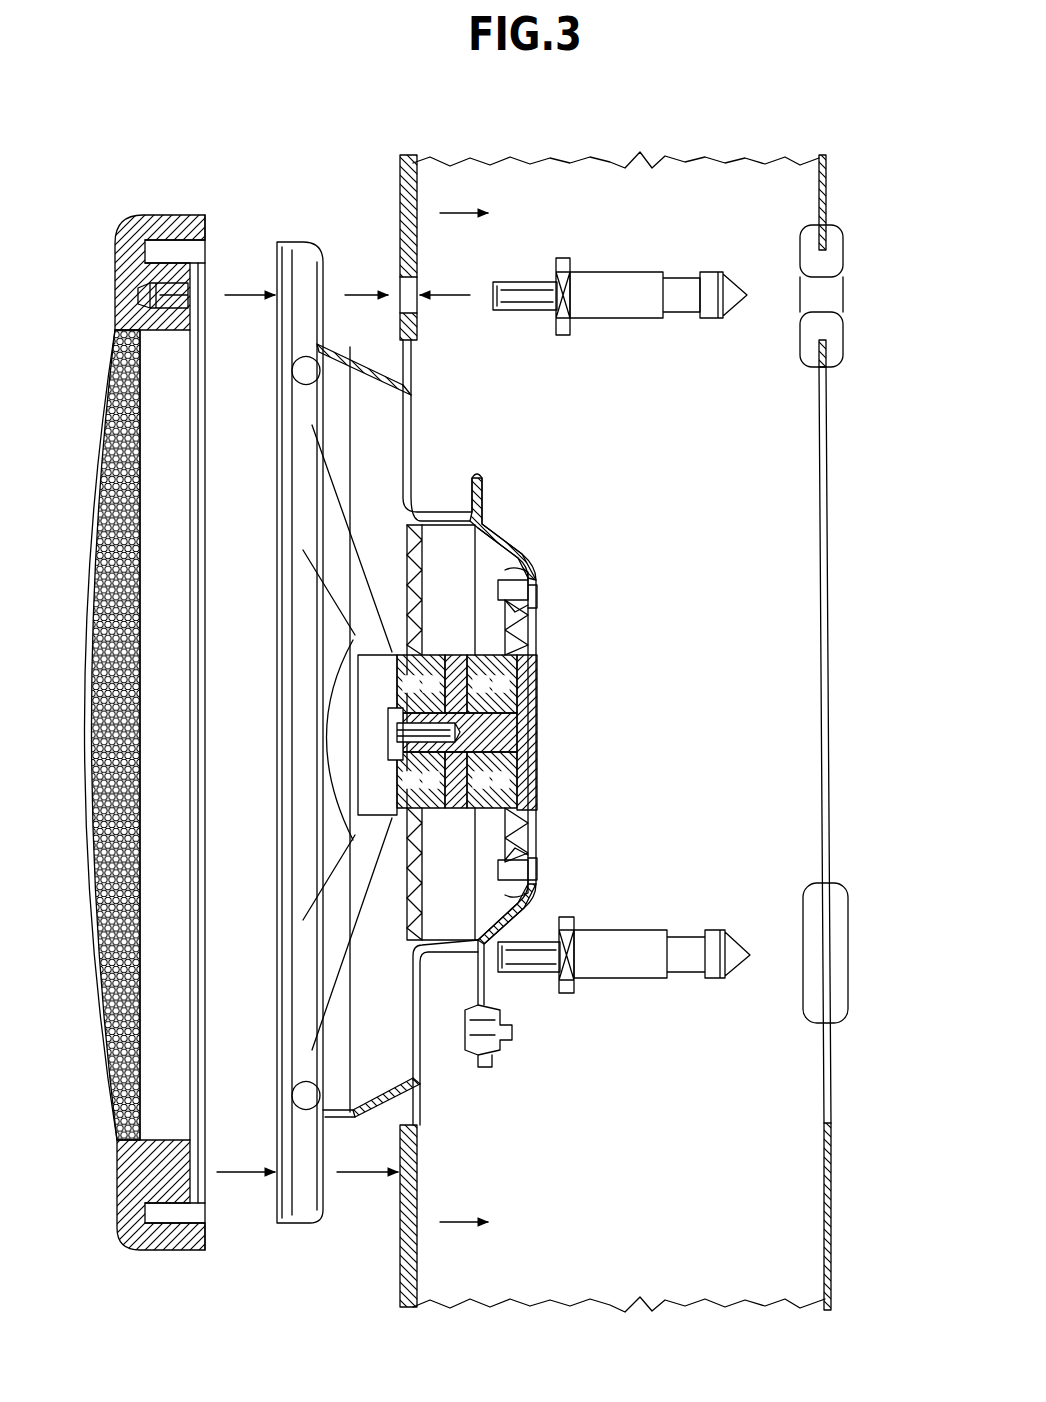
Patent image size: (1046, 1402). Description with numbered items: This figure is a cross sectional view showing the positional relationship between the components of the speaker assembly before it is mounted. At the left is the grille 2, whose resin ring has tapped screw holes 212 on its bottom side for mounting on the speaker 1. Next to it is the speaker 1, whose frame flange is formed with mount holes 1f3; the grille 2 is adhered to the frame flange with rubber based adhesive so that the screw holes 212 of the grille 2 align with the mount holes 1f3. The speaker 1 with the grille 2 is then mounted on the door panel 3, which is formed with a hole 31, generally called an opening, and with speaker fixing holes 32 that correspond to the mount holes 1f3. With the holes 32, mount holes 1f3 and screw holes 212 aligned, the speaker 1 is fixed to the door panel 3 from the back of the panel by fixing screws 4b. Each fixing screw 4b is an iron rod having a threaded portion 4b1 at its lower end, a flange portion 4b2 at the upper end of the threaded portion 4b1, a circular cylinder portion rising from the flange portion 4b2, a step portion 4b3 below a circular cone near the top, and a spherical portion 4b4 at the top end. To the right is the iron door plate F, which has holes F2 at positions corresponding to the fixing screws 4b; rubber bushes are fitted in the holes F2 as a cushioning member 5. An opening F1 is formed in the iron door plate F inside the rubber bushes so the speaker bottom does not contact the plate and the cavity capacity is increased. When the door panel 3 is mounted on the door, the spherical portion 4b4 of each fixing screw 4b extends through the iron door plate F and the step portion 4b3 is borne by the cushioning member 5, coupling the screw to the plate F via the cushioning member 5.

The speaker 1 is at (385, 721).
The mount holes 1f3 is at (277, 270).
The grille 2 is at (152, 728).
The tapped screw holes 212 is at (157, 280).
The door panel 3 is at (521, 732).
The hole 31 is at (423, 1118).
The speaker fixing holes 32 is at (400, 290).
The fixing screw 4b is at (635, 645).
The threaded portion 4b1 is at (509, 312).
The flange portion 4b2 is at (560, 337).
The step portion 4b3 is at (683, 320).
The spherical portion 4b4 is at (733, 328).
The cushioning member 5 is at (833, 253).
The iron door plate F is at (860, 732).
The opening F1 is at (830, 1125).
The holes F2 is at (826, 405).